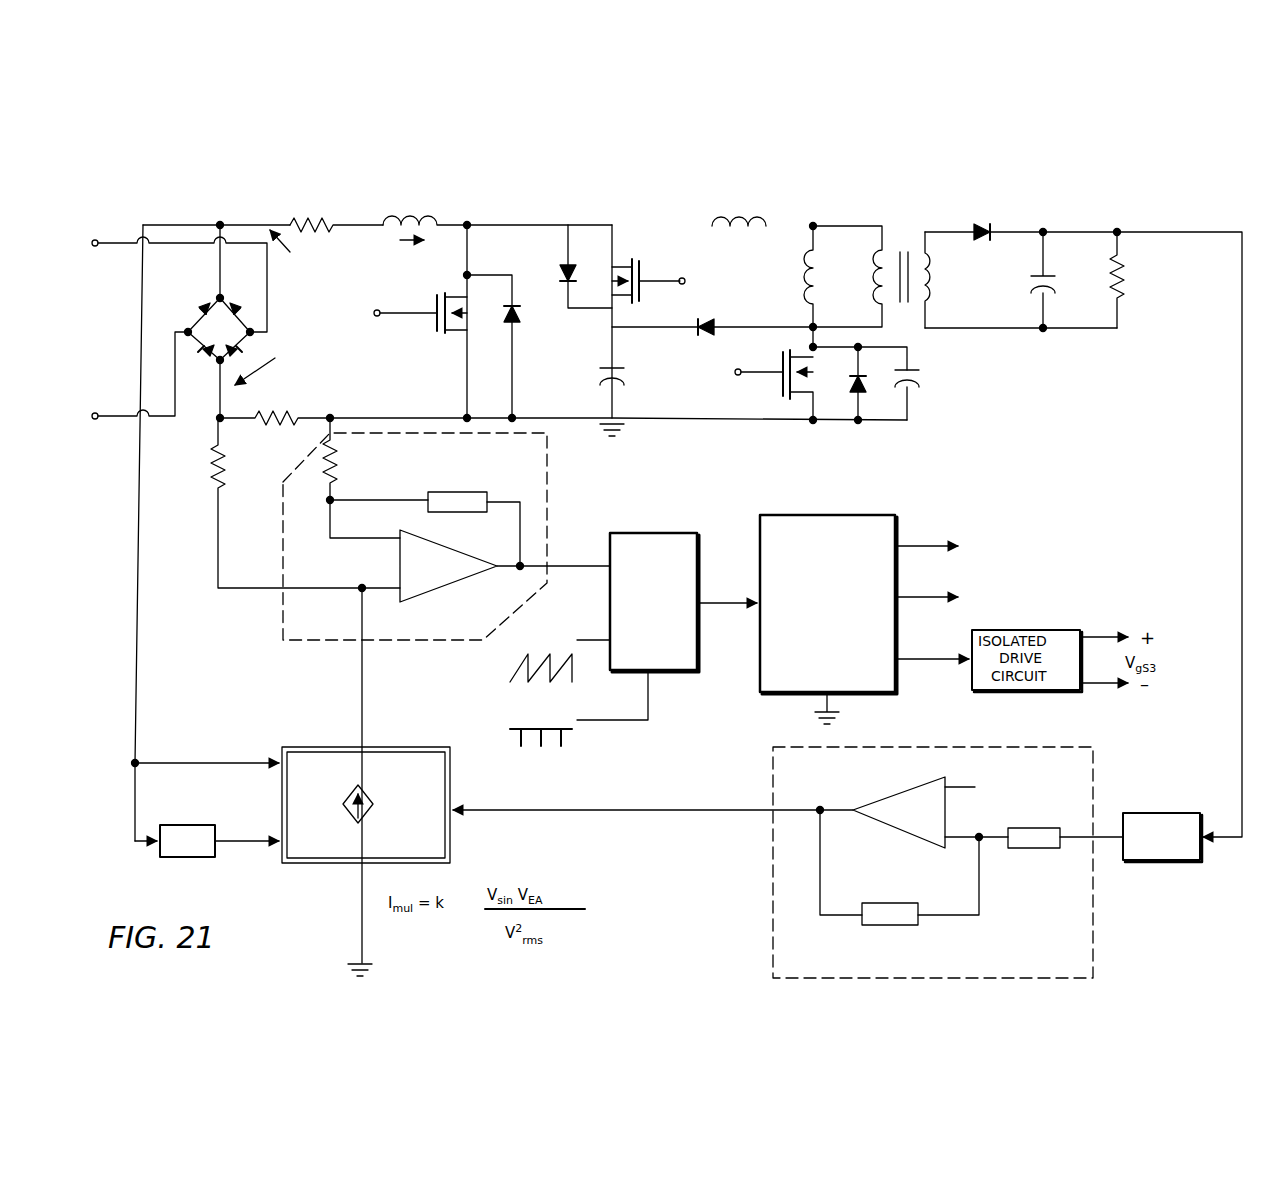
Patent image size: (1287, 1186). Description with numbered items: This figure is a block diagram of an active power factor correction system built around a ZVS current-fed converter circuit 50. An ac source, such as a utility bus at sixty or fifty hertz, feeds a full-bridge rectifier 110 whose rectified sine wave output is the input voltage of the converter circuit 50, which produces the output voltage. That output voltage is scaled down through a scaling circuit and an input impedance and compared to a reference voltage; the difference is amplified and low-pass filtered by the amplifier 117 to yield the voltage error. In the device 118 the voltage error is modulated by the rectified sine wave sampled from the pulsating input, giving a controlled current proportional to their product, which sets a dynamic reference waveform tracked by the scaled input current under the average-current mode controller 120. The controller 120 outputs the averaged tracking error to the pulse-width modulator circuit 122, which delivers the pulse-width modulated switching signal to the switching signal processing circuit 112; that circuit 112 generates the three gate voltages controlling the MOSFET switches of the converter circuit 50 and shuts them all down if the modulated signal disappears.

The converter circuit 50 is at (692, 166).
The full-bridge rectifier 110 is at (208, 304).
The switching signal processing circuit 112 is at (847, 515).
The amplifier 117 is at (1058, 746).
The device 118 is at (393, 747).
The average-current mode controller 120 is at (556, 489).
The pulse-width modulator circuit 122 is at (667, 672).